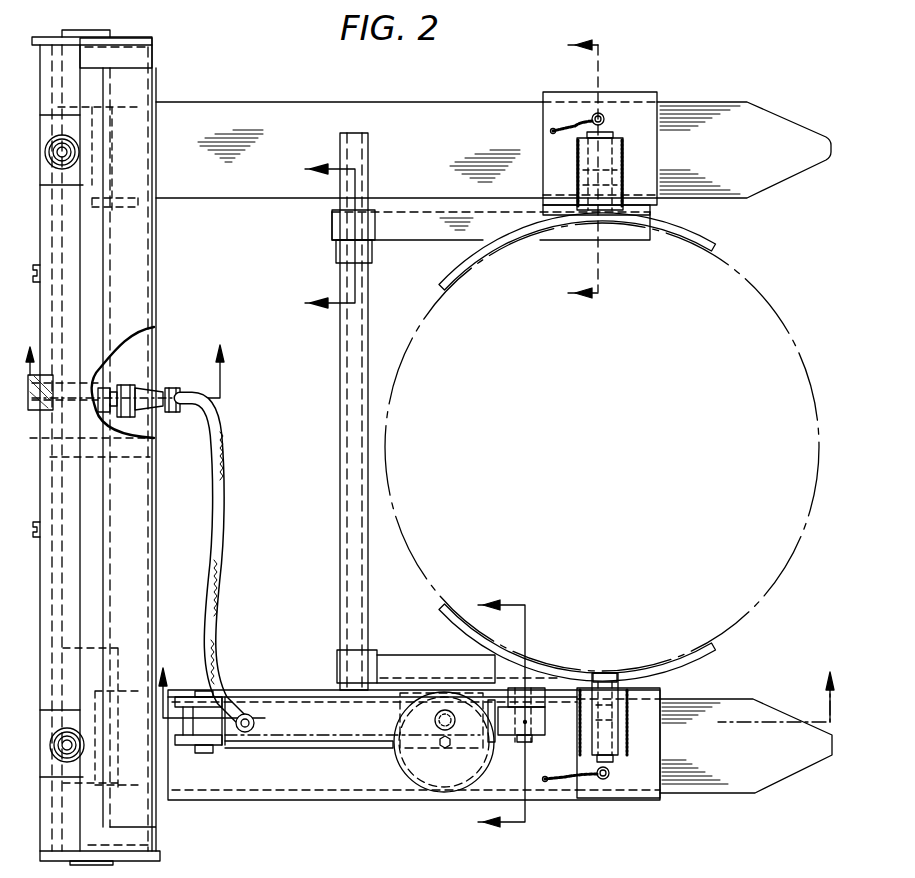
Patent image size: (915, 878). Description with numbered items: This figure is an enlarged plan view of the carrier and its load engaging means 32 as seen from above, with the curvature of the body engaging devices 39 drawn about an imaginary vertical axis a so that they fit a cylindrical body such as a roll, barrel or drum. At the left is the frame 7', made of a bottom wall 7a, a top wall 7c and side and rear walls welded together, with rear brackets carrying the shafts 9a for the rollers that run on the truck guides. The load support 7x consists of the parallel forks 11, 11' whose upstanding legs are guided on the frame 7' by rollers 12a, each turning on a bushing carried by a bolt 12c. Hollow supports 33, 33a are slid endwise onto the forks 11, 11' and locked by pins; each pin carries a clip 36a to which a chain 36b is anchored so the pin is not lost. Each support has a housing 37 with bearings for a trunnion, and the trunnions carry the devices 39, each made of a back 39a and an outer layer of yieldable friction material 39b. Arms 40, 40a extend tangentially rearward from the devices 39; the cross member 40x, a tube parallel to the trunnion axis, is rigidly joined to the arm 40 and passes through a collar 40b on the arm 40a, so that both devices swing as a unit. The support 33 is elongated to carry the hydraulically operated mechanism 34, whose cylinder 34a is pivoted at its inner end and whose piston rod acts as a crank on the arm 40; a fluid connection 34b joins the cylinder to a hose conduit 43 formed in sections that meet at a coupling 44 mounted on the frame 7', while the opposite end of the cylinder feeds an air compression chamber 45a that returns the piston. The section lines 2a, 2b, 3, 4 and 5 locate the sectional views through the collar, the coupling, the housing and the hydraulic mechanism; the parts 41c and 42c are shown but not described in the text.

The frame 7' is at (111, 447).
The load support 7x is at (338, 827).
The top wall 7c is at (135, 851).
The bottom wall 7a is at (357, 871).
The shafts 9a is at (85, 530).
The fork 11 is at (746, 762).
The fork 11' is at (493, 131).
The roller 12a is at (81, 738).
The bolt 12c is at (74, 152).
The section line 2a is at (319, 227).
The section line 2b is at (125, 363).
The section line 3 is at (570, 172).
The section line 4 is at (496, 689).
The section line 5 is at (494, 710).
The load engaging means 32 is at (750, 680).
The support 33 is at (648, 786).
The support 33a is at (620, 105).
The hydraulically operated mechanism 34 is at (328, 780).
The cylinder 34a is at (278, 733).
The fluid connection 34b is at (248, 714).
The clip 36a is at (603, 123).
The chain 36b is at (578, 781).
The housing 37 is at (632, 768).
The body engaging device 39 is at (461, 636).
The back 39a is at (718, 648).
The friction material 39b is at (648, 650).
The arm 40 is at (392, 657).
The arm 40a is at (400, 223).
The collar 40b is at (375, 248).
The cross member 40x is at (340, 540).
The clamp plates 41c is at (183, 746).
The block 42c is at (530, 742).
The fluid conduit 43 is at (226, 497).
The coupling 44 is at (160, 395).
The air compression chamber 45a is at (437, 776).
The vertical axis a is at (605, 450).